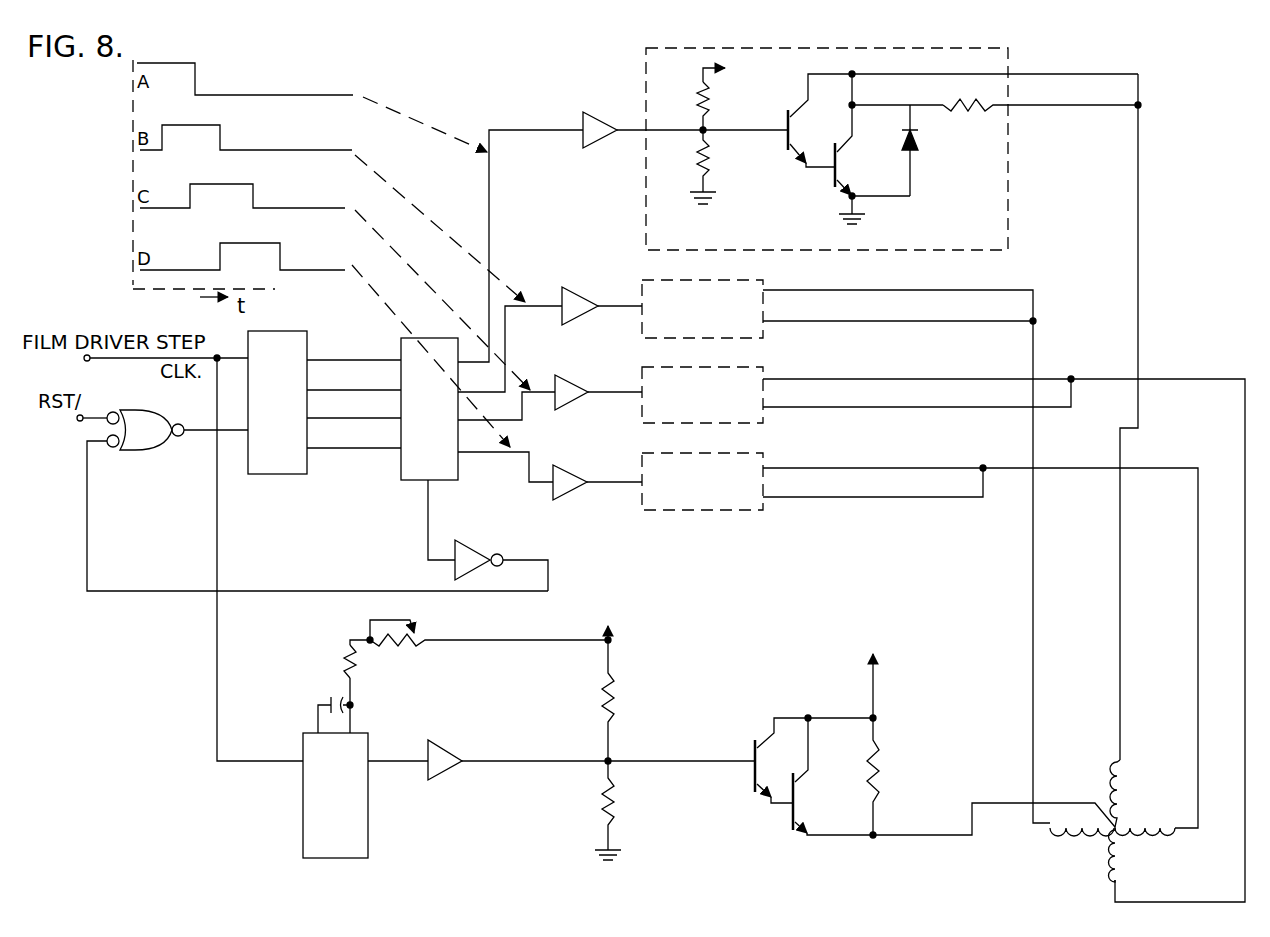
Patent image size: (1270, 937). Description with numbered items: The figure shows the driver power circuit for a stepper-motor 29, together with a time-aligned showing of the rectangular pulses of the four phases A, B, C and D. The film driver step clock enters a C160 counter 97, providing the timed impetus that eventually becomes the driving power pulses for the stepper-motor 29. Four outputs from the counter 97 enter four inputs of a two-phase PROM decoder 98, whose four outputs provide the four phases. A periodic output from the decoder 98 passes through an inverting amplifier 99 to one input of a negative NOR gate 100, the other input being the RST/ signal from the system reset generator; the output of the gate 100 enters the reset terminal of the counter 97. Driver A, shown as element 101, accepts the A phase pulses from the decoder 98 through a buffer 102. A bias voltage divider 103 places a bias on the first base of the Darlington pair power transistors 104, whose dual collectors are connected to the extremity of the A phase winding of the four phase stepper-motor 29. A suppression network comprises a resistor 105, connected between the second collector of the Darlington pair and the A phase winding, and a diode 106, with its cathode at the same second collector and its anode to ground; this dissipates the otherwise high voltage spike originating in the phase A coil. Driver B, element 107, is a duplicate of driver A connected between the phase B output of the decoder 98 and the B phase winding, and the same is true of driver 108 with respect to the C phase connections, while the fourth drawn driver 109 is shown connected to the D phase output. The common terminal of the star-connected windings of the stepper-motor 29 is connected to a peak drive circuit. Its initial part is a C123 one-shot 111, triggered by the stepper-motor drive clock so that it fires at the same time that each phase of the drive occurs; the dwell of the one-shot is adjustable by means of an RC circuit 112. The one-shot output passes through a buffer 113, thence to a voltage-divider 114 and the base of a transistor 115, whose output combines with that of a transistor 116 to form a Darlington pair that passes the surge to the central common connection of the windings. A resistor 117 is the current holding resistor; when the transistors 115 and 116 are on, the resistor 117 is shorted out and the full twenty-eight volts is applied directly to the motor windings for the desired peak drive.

The counter 97 is at (275, 331).
The two-phase PROM decoder 98 is at (424, 340).
The inverting amplifier 99 is at (485, 553).
The negative NOR gate 100 is at (164, 417).
The driver A 101 is at (645, 200).
The buffer 102 is at (603, 113).
The bias voltage divider 103 is at (705, 127).
The Darlington pair power transistors 104 is at (824, 138).
The resistor 105 is at (996, 120).
The diode 106 is at (916, 152).
The driver B 107 is at (638, 295).
The driver C 108 is at (638, 398).
The driver D 109 is at (638, 489).
The one-shot 111 is at (369, 811).
The RC circuit 112 is at (362, 663).
The buffer 113 is at (446, 757).
The voltage divider 114 is at (611, 753).
The transistor 115 is at (752, 760).
The transistor 116 is at (796, 797).
The current holding resistor 117 is at (880, 759).
The stepper motor 29 is at (1128, 828).